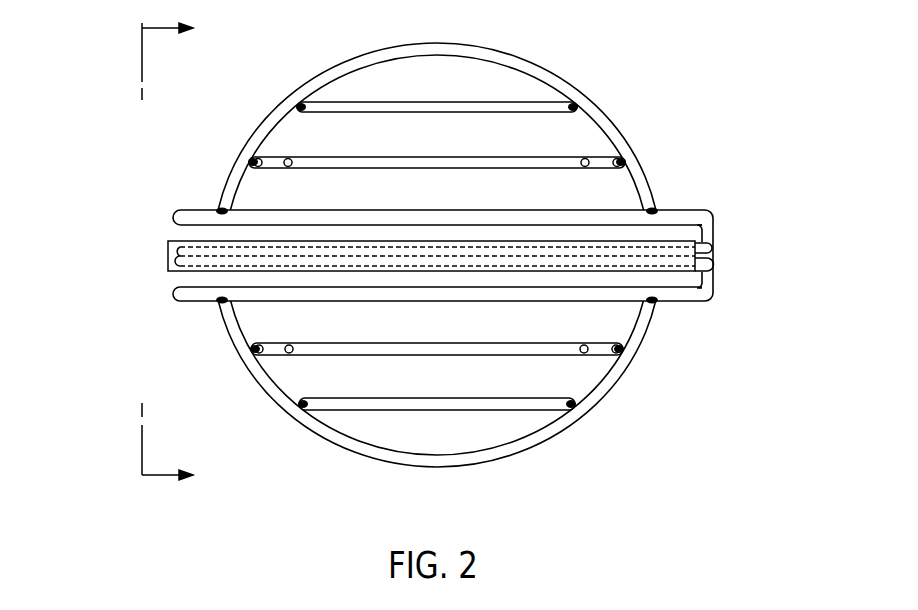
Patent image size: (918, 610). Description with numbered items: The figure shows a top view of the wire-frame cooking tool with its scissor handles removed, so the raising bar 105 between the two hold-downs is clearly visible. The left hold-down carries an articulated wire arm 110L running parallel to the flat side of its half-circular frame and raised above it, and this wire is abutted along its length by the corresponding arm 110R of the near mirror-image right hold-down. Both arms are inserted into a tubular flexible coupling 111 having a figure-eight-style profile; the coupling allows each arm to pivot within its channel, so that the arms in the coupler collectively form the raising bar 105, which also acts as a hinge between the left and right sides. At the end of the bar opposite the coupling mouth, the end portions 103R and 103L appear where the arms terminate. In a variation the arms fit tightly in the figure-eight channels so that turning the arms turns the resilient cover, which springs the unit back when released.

The raising bar 105 is at (153, 219).
The arm of the right hold-down 110R is at (200, 236).
The articulated wire arm of the left hold-down 110L is at (182, 263).
The tubular flexible coupling 111 is at (175, 256).
The right bracket portion 103R is at (684, 218).
The left bracket portion 103L is at (685, 293).